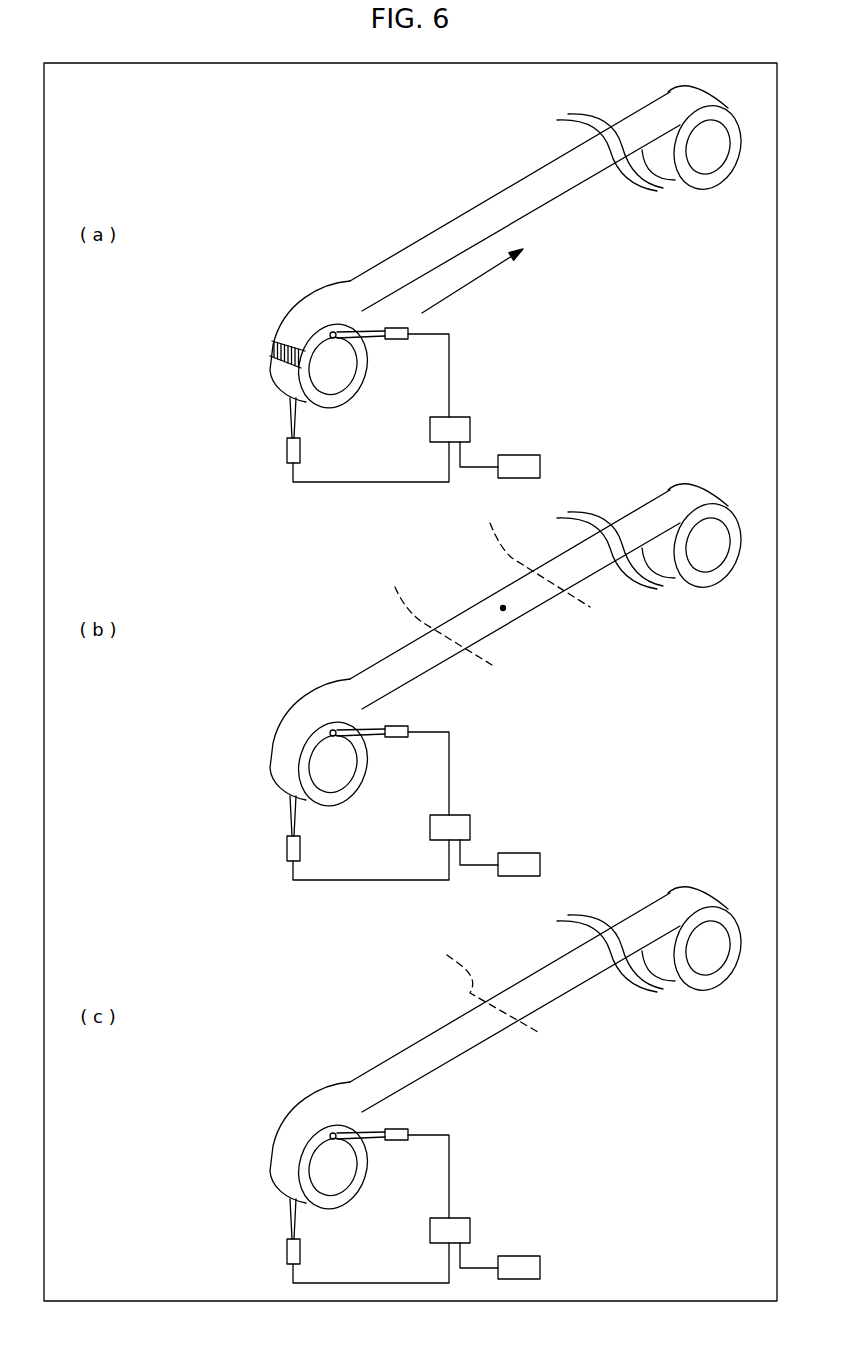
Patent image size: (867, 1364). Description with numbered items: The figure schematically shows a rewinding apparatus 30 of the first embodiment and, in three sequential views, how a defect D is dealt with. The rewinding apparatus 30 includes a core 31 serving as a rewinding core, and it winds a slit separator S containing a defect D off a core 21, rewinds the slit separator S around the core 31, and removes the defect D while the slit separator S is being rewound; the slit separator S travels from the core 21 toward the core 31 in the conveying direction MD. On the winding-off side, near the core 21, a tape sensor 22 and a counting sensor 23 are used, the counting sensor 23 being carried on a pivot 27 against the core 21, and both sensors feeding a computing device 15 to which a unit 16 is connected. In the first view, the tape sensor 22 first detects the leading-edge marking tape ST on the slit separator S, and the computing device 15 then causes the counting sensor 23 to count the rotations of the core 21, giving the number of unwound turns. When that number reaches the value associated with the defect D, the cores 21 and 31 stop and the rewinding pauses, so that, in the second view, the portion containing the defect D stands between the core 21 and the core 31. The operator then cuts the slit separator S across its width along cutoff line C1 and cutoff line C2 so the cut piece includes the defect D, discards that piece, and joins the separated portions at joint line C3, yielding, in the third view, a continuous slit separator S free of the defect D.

The rewinding apparatus 30 is at (281, 135).
The slit separator S is at (478, 226).
The core 31 is at (707, 183).
The conveying direction MD is at (474, 281).
The core 21 is at (325, 402).
The leading-edge marking tape ST is at (261, 347).
The pivot of cutting unit 27 is at (335, 338).
The counting sensor 23 is at (395, 340).
The tape sensor 22 is at (288, 447).
The computing device 15 is at (470, 428).
The storage unit 16 is at (540, 467).
The cutoff line C1 is at (536, 554).
The cutoff line C2 is at (438, 612).
The joint line C3 is at (487, 981).
The defect D is at (500, 592).